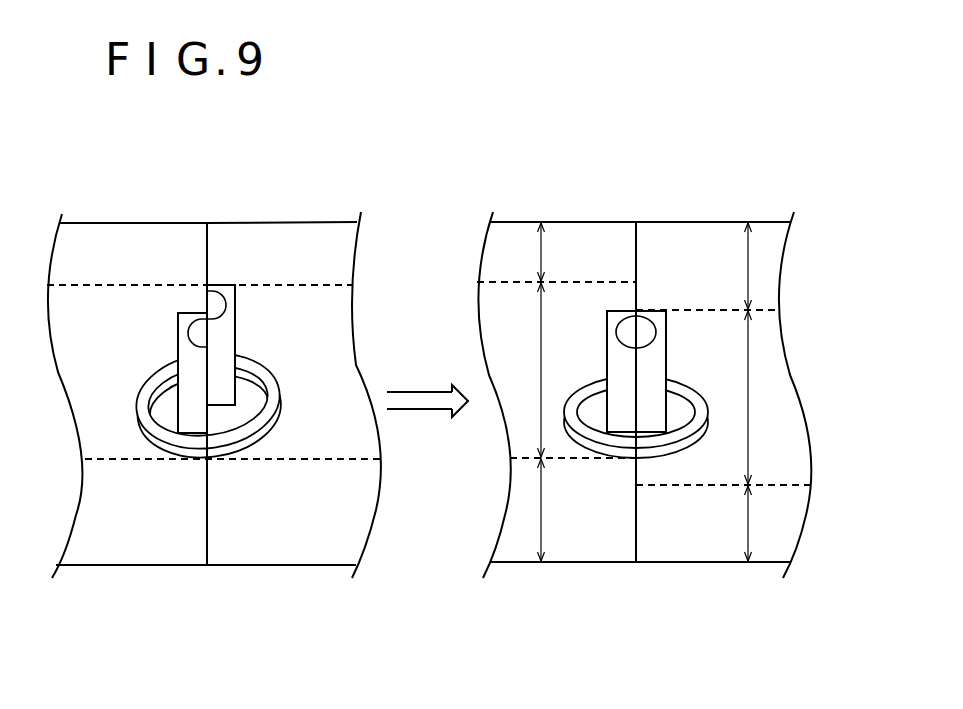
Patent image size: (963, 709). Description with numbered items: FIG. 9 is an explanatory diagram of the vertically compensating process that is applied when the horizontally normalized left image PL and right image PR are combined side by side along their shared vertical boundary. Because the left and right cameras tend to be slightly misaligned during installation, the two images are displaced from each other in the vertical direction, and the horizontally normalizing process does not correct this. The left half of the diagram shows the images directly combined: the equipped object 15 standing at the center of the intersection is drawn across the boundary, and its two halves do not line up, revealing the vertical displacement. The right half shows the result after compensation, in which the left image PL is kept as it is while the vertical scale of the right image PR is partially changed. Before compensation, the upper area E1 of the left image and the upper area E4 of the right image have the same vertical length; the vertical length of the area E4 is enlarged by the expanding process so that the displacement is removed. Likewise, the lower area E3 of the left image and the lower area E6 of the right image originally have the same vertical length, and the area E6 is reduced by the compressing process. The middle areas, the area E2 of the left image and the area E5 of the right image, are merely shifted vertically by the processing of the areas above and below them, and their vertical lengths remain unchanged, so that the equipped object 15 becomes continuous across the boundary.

The equipped object 15 is at (179, 351).
The left image PL is at (342, 368).
The right image PR is at (509, 368).
The area of the left image E1 is at (537, 252).
The area of the left image E2 is at (537, 370).
The area of the left image E3 is at (537, 510).
The area of the right image E4 is at (742, 266).
The area of the right image E5 is at (744, 397).
The area of the right image E6 is at (744, 523).